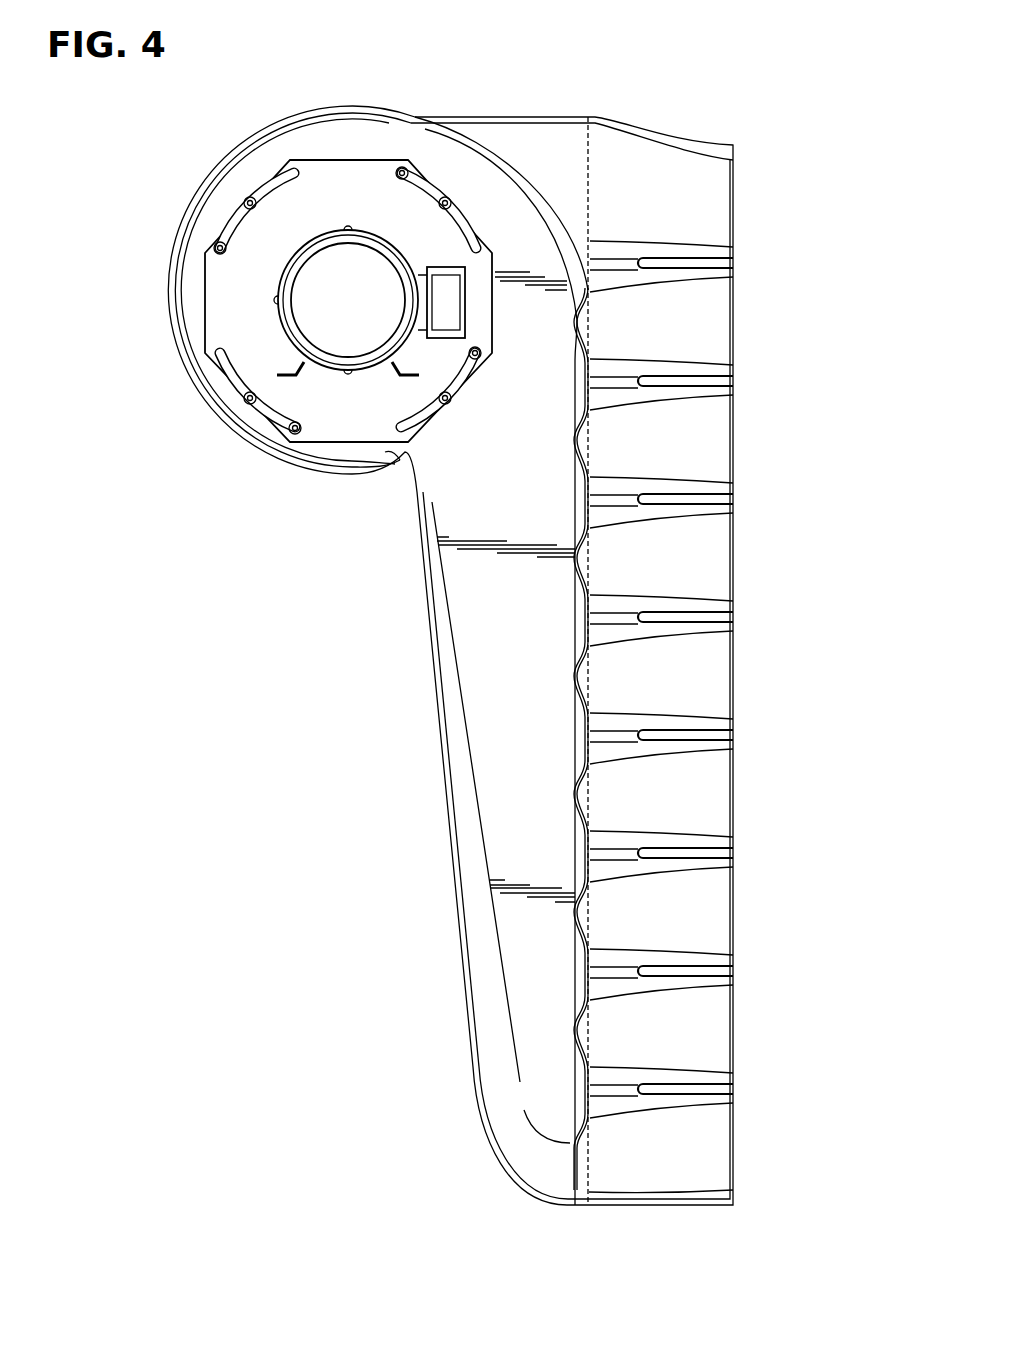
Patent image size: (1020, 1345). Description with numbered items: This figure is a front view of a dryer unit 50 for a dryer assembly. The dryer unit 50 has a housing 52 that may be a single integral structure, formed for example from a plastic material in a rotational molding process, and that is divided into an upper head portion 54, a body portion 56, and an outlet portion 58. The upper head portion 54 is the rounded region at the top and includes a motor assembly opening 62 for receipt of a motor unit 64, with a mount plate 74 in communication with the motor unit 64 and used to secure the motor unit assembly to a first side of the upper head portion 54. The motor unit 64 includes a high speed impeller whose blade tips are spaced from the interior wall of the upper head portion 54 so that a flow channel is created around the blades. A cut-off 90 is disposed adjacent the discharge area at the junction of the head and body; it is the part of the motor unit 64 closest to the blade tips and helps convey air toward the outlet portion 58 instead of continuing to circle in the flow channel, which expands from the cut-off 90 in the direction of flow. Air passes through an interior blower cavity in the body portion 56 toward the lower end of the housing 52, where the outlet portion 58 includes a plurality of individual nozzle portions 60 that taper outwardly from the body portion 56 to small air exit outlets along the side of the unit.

The dryer unit 50 is at (392, 576).
The housing 52 is at (462, 928).
The upper head portion 54 is at (310, 114).
The body portion 56 is at (462, 818).
The outlet portion 58 is at (617, 1206).
The nozzle portions 60 is at (722, 912).
The motor assembly opening 62 is at (357, 159).
The motor unit 64 is at (228, 327).
The mount plate 74 is at (478, 262).
The cut-off 90 is at (407, 457).